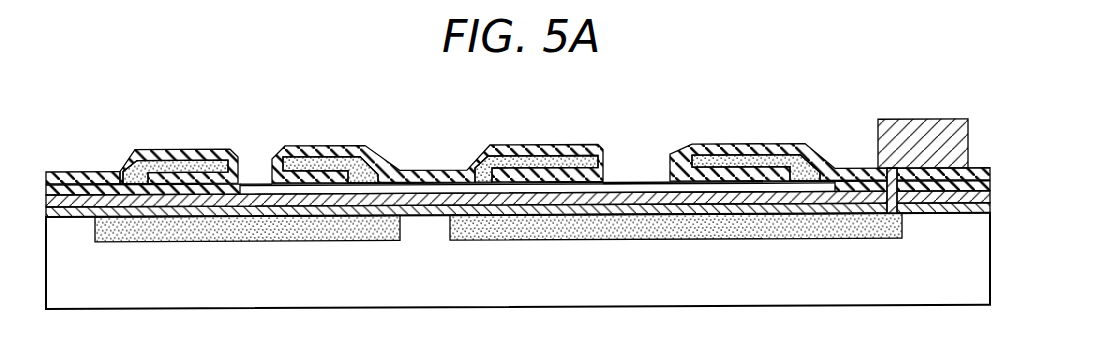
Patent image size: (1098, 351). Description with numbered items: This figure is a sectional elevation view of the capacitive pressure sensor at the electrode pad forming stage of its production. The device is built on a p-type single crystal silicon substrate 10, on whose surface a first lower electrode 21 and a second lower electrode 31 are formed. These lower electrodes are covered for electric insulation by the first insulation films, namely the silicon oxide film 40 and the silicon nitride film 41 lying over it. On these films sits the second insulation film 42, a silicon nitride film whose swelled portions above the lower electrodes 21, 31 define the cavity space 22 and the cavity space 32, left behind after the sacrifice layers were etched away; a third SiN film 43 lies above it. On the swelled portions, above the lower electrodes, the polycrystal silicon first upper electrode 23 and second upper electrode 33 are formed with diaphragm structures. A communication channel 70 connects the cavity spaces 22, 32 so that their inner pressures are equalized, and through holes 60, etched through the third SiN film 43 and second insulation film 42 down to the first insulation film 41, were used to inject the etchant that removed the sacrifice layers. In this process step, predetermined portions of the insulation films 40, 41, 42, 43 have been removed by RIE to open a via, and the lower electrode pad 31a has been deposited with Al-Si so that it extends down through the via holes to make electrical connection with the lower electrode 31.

The single crystal silicon substrate 10 is at (980, 285).
The first lower electrode 21 is at (230, 232).
The cavity space 22 is at (290, 190).
The first upper electrode 23 is at (156, 149).
The second lower electrode 31 is at (790, 235).
The lower electrode pad 31a is at (945, 132).
The cavity space 32 is at (580, 190).
The second upper electrode 33 is at (760, 150).
The first insulation film 40 is at (985, 210).
The first insulation film 41 is at (987, 198).
The second insulation film 42 is at (987, 188).
The third SiN film 43 is at (983, 170).
The through holes 60 is at (255, 182).
The communication channel 70 is at (425, 176).